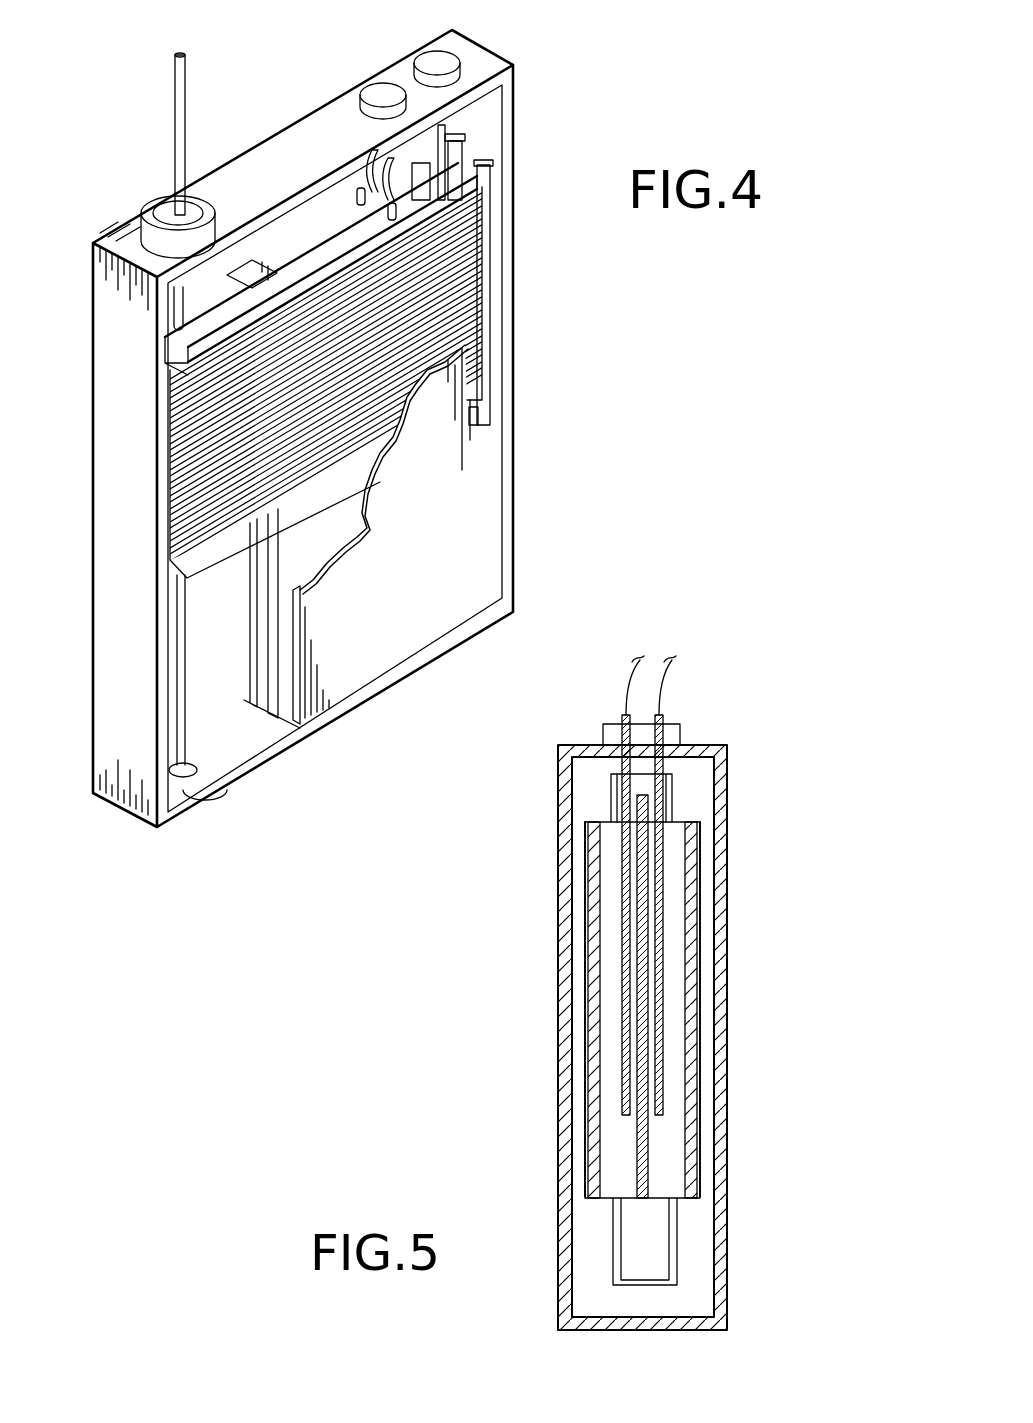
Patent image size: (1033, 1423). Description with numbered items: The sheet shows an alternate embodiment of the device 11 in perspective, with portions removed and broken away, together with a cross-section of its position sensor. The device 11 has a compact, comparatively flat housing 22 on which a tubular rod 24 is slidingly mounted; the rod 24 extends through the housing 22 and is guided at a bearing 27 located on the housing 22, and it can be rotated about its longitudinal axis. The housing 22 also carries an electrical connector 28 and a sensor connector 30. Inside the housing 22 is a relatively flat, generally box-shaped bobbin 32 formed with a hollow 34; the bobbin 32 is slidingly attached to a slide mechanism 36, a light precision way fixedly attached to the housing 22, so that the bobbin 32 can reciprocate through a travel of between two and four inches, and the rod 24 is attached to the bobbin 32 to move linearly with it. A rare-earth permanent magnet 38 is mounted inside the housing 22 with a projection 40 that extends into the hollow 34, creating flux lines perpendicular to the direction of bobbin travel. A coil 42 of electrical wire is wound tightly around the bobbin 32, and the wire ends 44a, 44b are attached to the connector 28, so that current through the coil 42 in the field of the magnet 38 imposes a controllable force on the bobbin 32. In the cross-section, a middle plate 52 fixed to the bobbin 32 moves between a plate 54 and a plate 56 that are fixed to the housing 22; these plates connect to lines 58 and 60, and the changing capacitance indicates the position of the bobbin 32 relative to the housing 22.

In FIG. 4, the device 11 is at (548, 418).
In FIG. 4, the housing 22 is at (113, 350).
In FIG. 5, the housing 22 is at (727, 783).
In FIG. 4, the rod 24 is at (177, 80).
In FIG. 4, the bearing 27 is at (198, 770).
In FIG. 4, the electrical connector 28 is at (373, 93).
In FIG. 4, the sensor connector 30 is at (440, 62).
In FIG. 5, the sensor connector 30 is at (673, 733).
In FIG. 4, the bobbin 32 is at (305, 502).
In FIG. 5, the bobbin 32 is at (675, 1092).
In FIG. 4, the hollow 34 is at (302, 253).
In FIG. 4, the slide mechanism 36 is at (487, 183).
In FIG. 5, the slide mechanism 36 is at (650, 1245).
In FIG. 4, the magnet 38 is at (400, 642).
In FIG. 4, the projection 40 is at (298, 565).
In FIG. 4, the coil 42 is at (443, 310).
In FIG. 5, the coil 42 is at (703, 990).
In FIG. 4, the end of electrical wire 44a is at (382, 180).
In FIG. 4, the end of electrical wire 44b is at (393, 227).
In FIG. 4, the middle plate 52 is at (453, 157).
In FIG. 5, the middle plate 52 is at (638, 1150).
In FIG. 4, the plate 54 is at (480, 117).
In FIG. 5, the plate 54 is at (663, 905).
In FIG. 5, the plate 56 is at (627, 907).
In FIG. 5, the line 58 is at (628, 687).
In FIG. 5, the line 60 is at (665, 688).